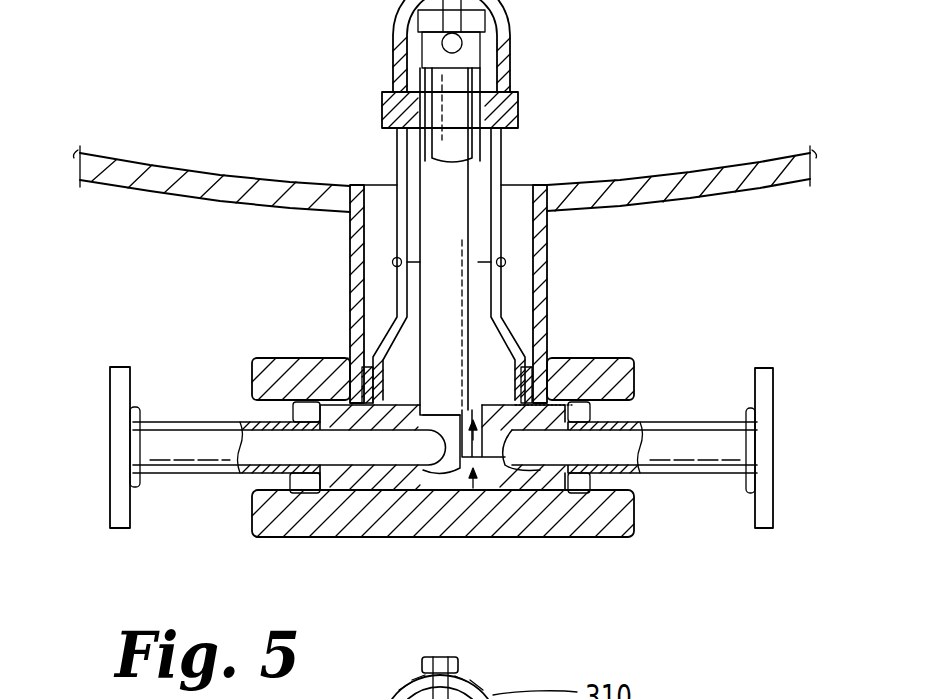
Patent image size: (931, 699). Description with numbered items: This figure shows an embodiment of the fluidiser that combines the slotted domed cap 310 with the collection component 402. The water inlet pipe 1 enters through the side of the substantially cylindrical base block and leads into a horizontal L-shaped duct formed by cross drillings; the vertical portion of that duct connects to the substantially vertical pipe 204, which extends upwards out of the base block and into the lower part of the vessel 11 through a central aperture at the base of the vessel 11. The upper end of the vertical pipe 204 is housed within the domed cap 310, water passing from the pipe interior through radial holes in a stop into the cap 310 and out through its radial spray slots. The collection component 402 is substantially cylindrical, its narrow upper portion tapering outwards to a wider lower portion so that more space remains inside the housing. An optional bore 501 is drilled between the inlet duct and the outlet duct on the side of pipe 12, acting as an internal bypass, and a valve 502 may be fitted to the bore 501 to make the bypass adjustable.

The water inlet pipe 1 is at (197, 447).
The vessel 11 is at (780, 170).
The second pipe / connection line 12 is at (717, 455).
The vertical pipe 204 is at (437, 287).
The domed cap 310 is at (507, 22).
The collection component 402 is at (503, 168).
The bore 501 is at (473, 480).
The valve 502 is at (490, 478).